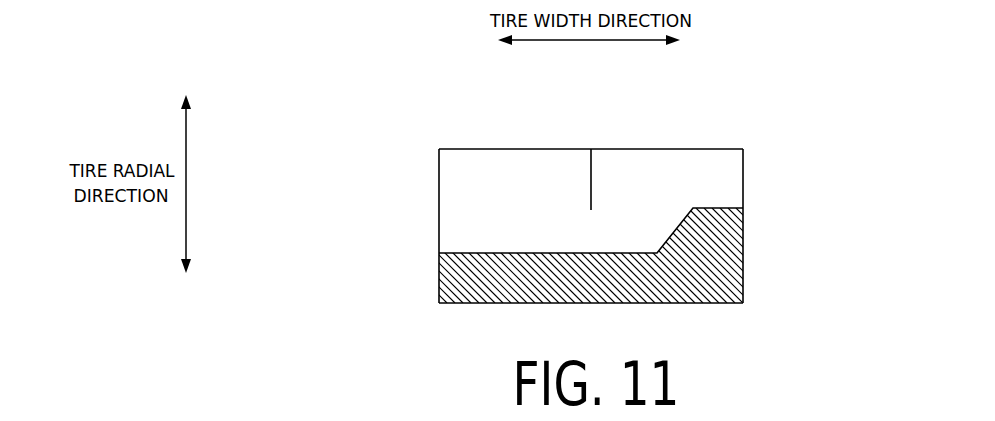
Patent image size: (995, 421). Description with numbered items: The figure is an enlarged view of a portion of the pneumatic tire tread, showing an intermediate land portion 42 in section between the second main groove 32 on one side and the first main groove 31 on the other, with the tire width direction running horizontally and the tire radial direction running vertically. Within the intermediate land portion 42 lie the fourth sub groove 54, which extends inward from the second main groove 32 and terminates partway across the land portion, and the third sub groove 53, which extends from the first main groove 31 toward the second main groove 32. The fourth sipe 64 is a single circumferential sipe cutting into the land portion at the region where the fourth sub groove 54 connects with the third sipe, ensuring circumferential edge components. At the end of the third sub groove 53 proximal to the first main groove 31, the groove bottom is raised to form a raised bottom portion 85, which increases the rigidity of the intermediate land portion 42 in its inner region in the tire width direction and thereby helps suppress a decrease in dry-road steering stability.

The intermediate land portion 42 is at (637, 148).
The fourth sub groove 54 is at (457, 183).
The third sub groove 53 is at (727, 176).
The fourth sipe 64 is at (591, 173).
The raised bottom portion 85 is at (707, 208).
The second main groove 32 is at (389, 278).
The first main groove 31 is at (829, 278).